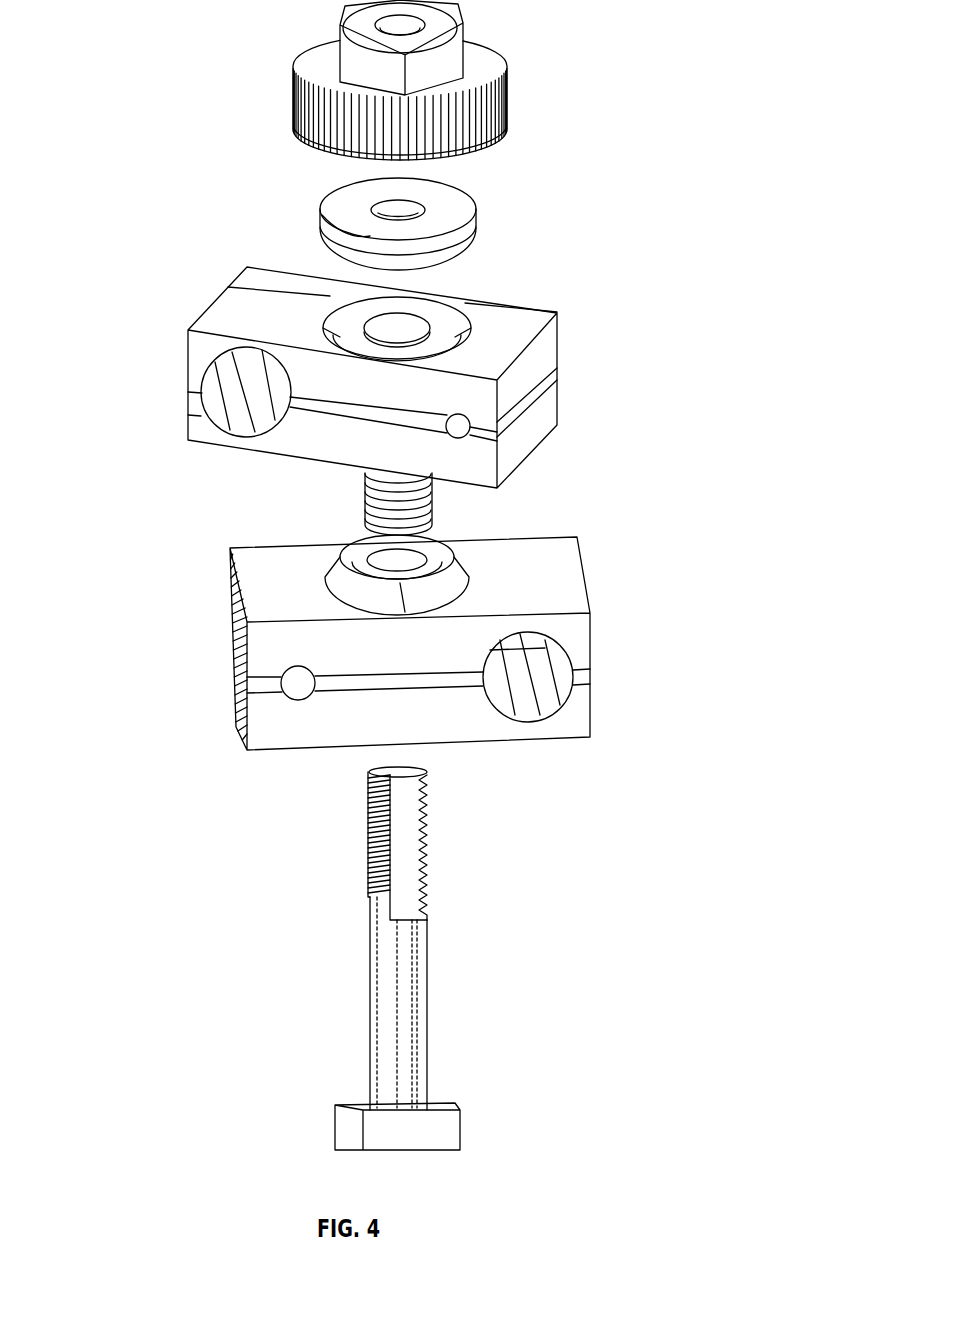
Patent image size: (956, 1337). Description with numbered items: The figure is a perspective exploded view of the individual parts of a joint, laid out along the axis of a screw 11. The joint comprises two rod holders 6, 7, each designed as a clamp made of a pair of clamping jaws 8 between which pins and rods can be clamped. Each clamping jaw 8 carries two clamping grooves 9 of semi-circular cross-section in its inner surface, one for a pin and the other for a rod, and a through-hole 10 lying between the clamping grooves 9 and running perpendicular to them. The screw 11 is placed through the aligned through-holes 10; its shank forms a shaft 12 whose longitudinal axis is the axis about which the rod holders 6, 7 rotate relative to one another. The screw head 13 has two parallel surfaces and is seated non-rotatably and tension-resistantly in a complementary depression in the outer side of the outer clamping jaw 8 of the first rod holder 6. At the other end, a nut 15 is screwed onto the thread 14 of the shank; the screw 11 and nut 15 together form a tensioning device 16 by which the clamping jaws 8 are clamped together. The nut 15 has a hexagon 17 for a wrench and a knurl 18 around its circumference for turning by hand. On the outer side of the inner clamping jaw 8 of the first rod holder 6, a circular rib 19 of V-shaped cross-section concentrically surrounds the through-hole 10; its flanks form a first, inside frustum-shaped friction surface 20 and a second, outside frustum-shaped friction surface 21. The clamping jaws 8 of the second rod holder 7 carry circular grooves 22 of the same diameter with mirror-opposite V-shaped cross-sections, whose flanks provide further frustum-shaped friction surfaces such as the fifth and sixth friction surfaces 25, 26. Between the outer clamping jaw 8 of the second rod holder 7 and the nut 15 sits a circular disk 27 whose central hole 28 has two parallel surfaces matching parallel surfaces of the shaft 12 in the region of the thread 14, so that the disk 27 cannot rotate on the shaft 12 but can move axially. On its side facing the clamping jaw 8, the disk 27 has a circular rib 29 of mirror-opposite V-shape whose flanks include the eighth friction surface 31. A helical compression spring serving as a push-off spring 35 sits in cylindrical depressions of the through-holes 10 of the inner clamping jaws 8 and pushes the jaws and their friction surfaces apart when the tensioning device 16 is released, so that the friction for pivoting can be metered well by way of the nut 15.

The rod holder 6 is at (393, 628).
The rod holder 7 is at (352, 368).
The clamping jaw 8 is at (537, 417).
The clamping groove 9 is at (187, 417).
The through-hole 10 is at (406, 321).
The screw 11 is at (433, 958).
The shaft 12 is at (433, 958).
The screw head 13 is at (432, 1128).
The thread 14 is at (375, 846).
The nut 15 is at (425, 80).
The tensioning device 16 is at (425, 575).
The hexagon 17 is at (370, 63).
The knurl 18 is at (305, 135).
The circular rib 19 is at (455, 552).
The first friction surface 20 is at (440, 545).
The second friction surface 21 is at (470, 585).
The circular groove 22 is at (446, 306).
The fifth friction surface 25 is at (480, 340).
The sixth friction surface 26 is at (237, 288).
The disk 27 is at (400, 210).
The central hole 28 is at (404, 207).
The circular rib 29 is at (345, 252).
The eighth friction surface 31 is at (367, 270).
The push-off spring 35 is at (367, 497).